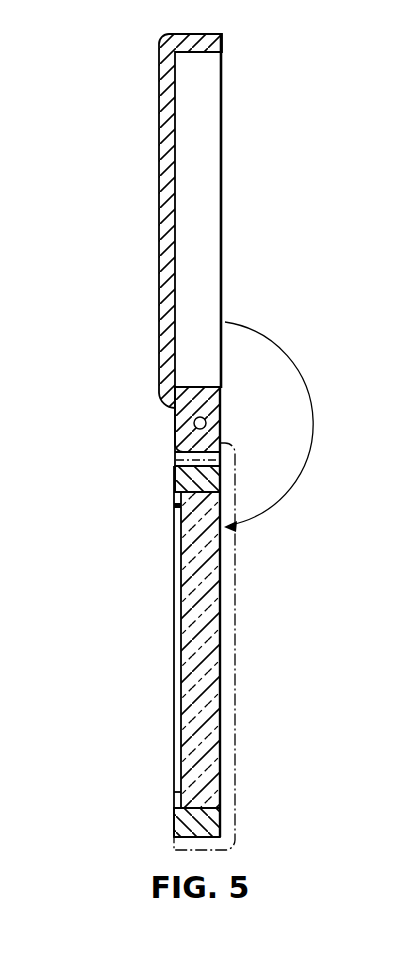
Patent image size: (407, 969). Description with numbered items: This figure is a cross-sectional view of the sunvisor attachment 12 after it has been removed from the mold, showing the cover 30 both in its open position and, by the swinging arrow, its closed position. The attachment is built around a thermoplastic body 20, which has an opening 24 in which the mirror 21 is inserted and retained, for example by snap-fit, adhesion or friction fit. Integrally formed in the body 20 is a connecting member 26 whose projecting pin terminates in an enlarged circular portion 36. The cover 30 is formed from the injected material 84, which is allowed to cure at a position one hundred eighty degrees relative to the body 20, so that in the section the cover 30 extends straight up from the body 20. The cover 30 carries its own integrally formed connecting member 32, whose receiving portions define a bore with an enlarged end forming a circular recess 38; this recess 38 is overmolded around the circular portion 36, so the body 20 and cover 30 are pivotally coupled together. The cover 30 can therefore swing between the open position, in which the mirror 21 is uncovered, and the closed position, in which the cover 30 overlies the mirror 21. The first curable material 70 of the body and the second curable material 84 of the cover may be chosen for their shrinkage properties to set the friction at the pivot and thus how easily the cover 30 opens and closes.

The sunvisor attachment 12 is at (328, 288).
The body 20 is at (170, 819).
The mirror 21 is at (208, 653).
The opening 24 is at (222, 791).
The connecting member 26 is at (175, 460).
The cover 30 is at (155, 214).
The connecting member 32 is at (175, 430).
The circular portion 36 is at (218, 429).
The circular recess 38 is at (197, 420).
The first curable material 70 is at (222, 826).
The injected material 84 is at (166, 310).